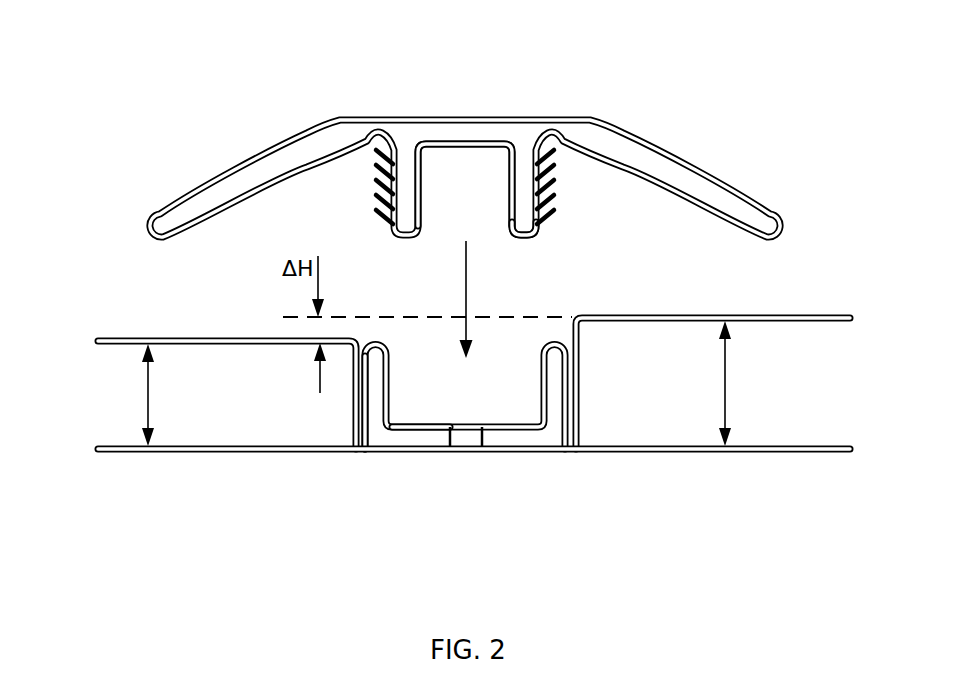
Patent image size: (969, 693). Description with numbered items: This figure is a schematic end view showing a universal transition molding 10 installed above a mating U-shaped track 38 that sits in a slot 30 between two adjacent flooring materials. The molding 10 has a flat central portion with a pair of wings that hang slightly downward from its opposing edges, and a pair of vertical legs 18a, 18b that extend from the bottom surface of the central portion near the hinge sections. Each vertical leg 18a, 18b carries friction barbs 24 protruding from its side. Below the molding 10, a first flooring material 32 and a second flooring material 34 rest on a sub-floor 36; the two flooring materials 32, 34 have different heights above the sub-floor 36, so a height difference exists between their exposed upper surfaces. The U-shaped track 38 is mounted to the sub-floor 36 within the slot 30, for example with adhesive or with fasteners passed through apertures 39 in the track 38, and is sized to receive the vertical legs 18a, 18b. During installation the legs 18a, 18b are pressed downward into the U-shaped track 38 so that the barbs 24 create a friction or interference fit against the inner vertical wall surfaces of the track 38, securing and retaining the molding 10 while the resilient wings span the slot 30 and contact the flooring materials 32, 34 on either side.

The universal transition molding 10 is at (465, 151).
The vertical leg 18a is at (422, 182).
The vertical leg 18b is at (523, 238).
The friction barbs 24 is at (385, 185).
The slot 30 is at (456, 389).
The first flooring material 32 is at (272, 404).
The second flooring material 34 is at (657, 397).
The sub-floor 36 is at (364, 453).
The U-shaped track 38 is at (425, 437).
The apertures 39 is at (483, 437).